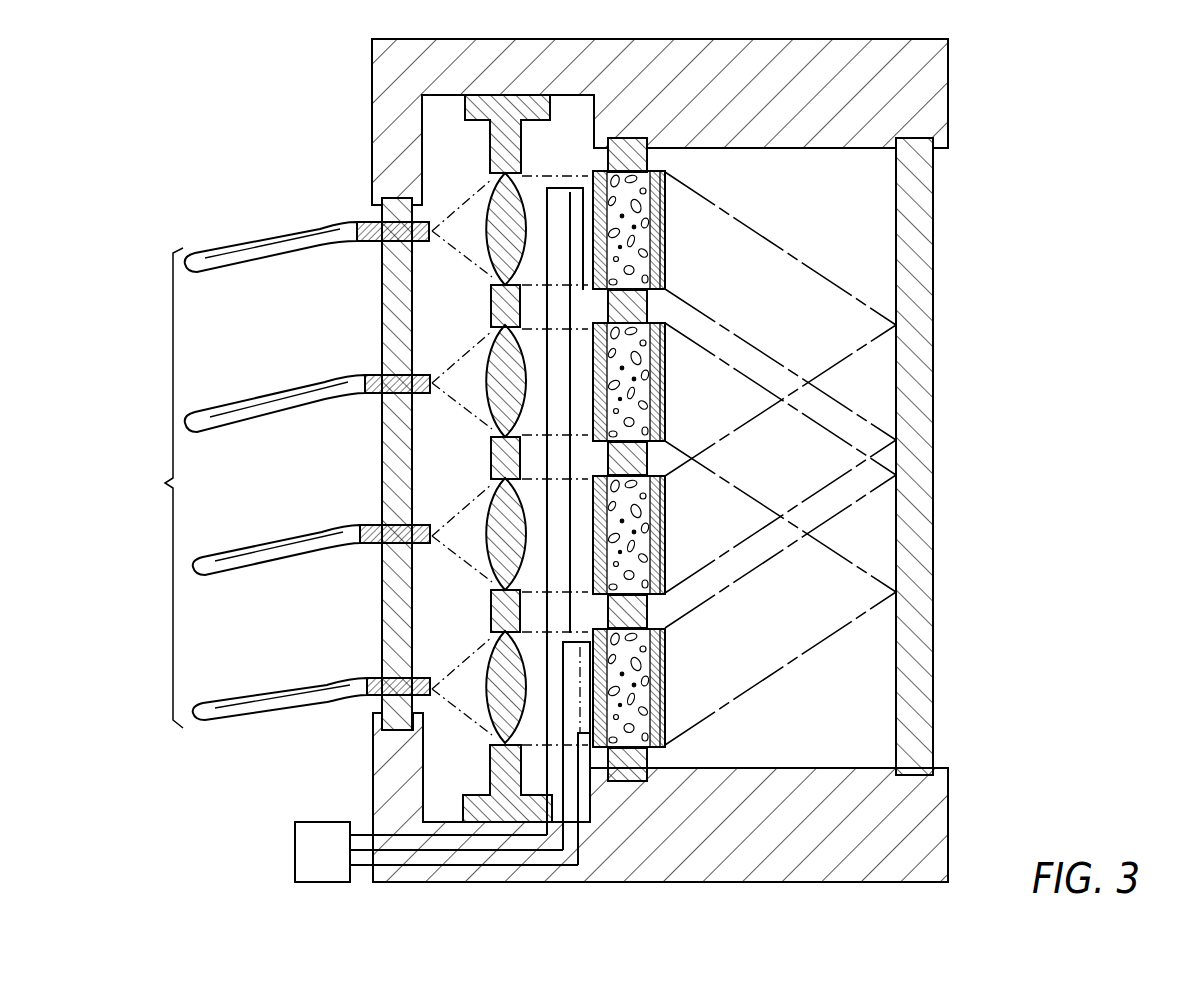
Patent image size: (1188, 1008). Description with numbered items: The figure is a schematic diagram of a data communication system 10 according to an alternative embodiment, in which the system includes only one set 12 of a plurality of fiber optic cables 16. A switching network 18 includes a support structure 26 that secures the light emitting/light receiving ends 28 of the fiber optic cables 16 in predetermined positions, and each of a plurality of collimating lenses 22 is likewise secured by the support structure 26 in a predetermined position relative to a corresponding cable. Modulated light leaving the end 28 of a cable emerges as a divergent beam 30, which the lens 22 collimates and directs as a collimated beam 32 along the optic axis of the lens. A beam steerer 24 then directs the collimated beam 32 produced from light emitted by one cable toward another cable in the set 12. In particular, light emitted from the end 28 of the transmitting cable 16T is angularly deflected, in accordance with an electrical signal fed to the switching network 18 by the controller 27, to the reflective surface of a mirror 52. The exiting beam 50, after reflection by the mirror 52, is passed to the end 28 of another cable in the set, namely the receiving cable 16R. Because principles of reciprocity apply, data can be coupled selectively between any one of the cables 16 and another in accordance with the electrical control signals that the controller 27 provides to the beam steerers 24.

The data communication system 10 is at (306, 95).
The set of fiber optic cables 12 is at (160, 488).
The fiber optic cable 16 is at (290, 387).
The transmitting fiber optic cable 16T is at (270, 238).
The receiving fiber optic cable 16R is at (277, 542).
The switching network 18 is at (452, 152).
The collimating lens 22 is at (492, 202).
The beam steerer 24 is at (666, 259).
The support structure 26 is at (926, 98).
The controller 27 is at (327, 822).
The light emitting/light receiving end 28 is at (432, 238).
The divergent beam 30 is at (478, 243).
The collimated beam 32 is at (552, 281).
The exiting beam 50 is at (796, 313).
The mirror 52 is at (934, 437).